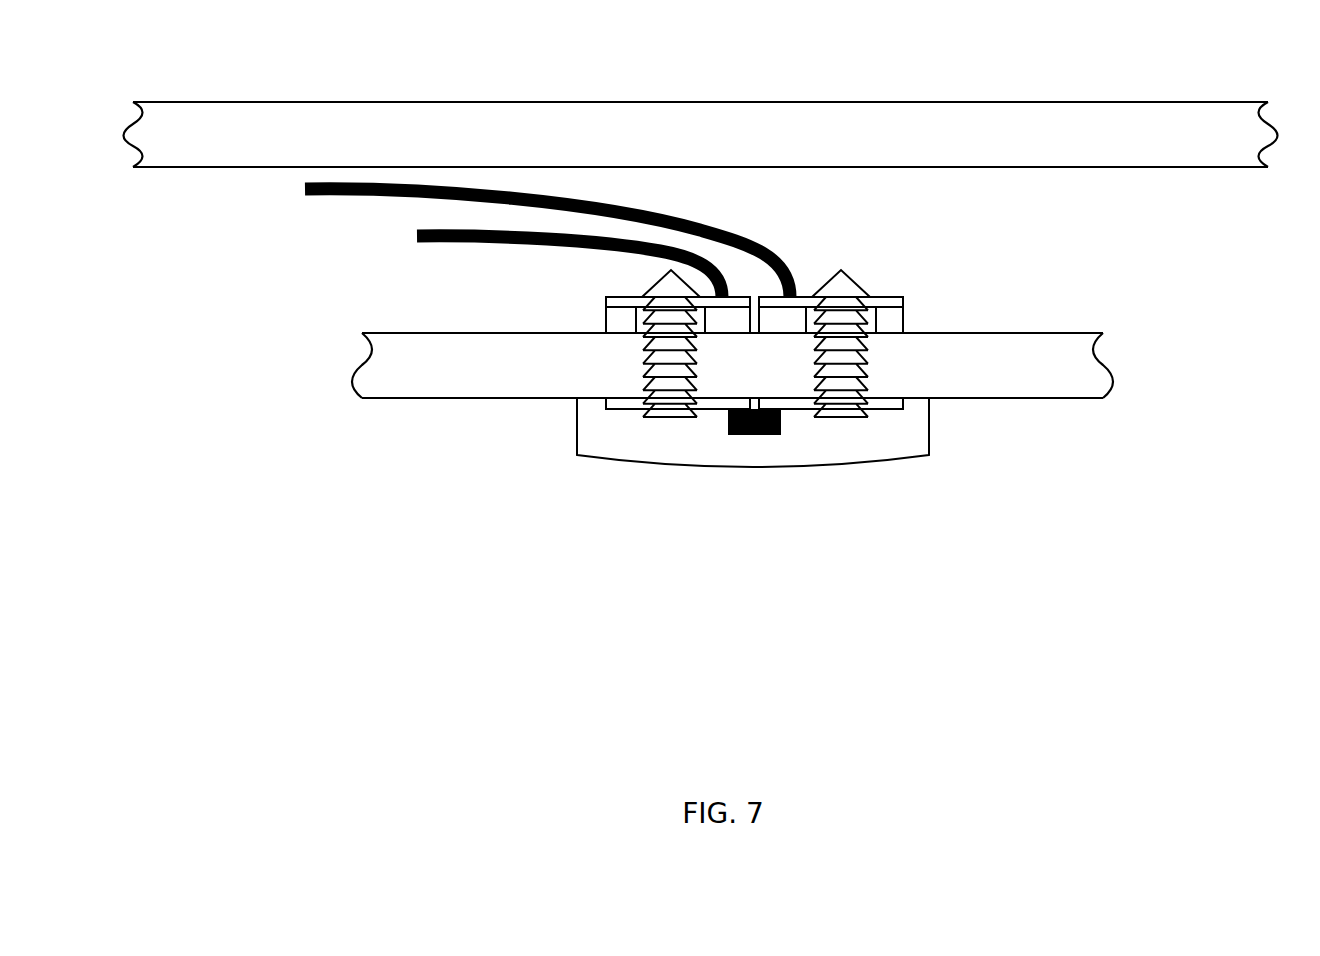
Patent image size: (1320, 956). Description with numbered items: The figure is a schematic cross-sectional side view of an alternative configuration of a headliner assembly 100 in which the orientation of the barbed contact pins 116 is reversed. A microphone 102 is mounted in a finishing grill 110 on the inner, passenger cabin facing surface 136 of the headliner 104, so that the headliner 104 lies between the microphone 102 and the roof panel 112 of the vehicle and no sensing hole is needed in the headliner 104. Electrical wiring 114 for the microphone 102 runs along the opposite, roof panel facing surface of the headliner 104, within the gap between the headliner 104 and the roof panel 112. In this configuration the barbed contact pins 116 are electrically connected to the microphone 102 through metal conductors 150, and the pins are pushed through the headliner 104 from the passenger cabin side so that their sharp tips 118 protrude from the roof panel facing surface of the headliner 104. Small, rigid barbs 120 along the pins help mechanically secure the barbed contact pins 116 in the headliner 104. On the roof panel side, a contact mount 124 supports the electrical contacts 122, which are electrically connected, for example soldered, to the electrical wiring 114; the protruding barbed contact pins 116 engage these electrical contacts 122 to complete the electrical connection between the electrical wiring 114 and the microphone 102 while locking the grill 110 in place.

The headliner assembly 100 is at (322, 287).
The microphone 102 is at (753, 435).
The headliner 104 is at (732, 409).
The finishing grill 110 is at (920, 455).
The roof panel 112 is at (548, 117).
The electrical wiring 114 is at (498, 241).
The barbed contact pins 116 is at (758, 357).
The sharp tips 118 is at (666, 270).
The barbs 120 is at (643, 363).
The electrical contacts 122 is at (607, 303).
The contact mount 124 is at (903, 318).
The passenger cabin facing surface 136 is at (510, 398).
The metal conductors 150 is at (714, 409).